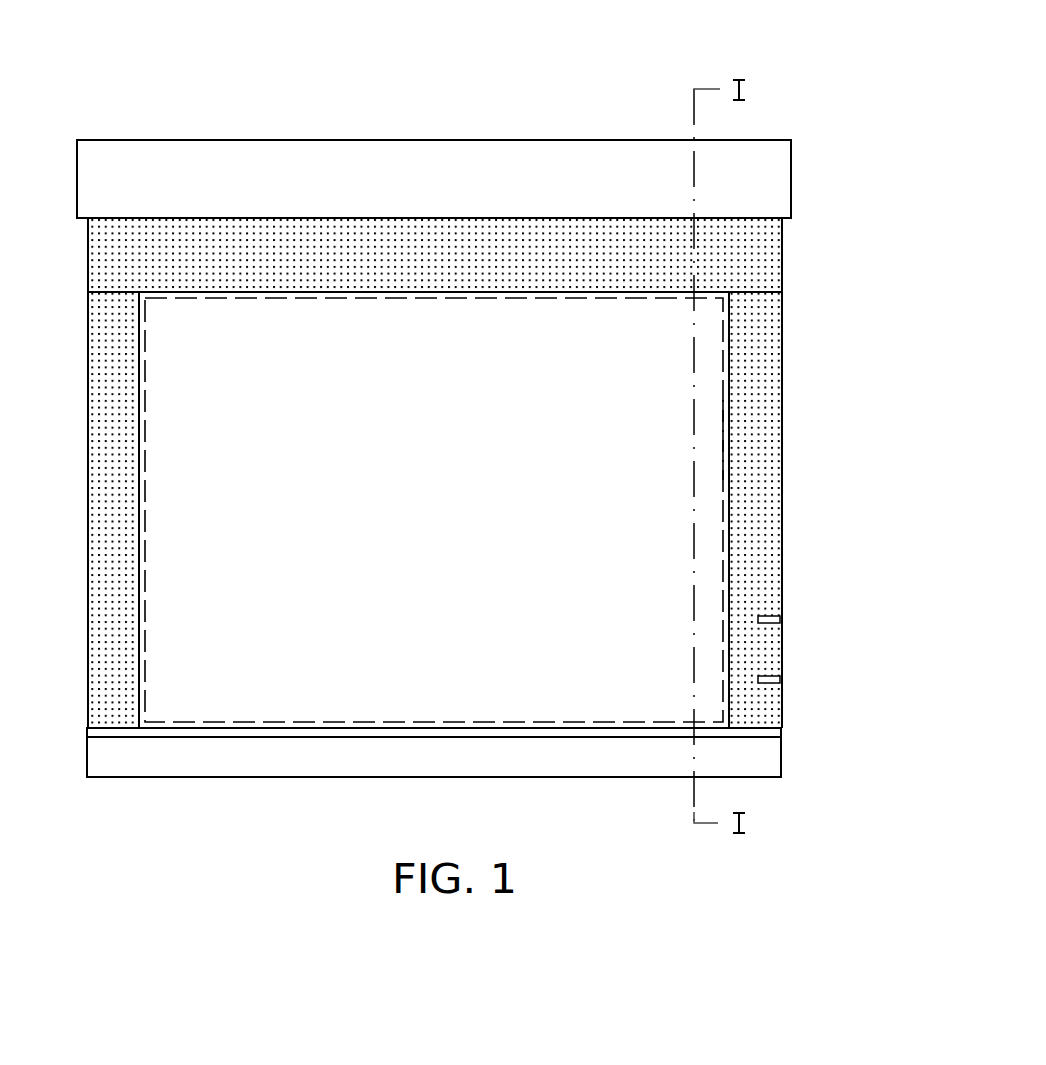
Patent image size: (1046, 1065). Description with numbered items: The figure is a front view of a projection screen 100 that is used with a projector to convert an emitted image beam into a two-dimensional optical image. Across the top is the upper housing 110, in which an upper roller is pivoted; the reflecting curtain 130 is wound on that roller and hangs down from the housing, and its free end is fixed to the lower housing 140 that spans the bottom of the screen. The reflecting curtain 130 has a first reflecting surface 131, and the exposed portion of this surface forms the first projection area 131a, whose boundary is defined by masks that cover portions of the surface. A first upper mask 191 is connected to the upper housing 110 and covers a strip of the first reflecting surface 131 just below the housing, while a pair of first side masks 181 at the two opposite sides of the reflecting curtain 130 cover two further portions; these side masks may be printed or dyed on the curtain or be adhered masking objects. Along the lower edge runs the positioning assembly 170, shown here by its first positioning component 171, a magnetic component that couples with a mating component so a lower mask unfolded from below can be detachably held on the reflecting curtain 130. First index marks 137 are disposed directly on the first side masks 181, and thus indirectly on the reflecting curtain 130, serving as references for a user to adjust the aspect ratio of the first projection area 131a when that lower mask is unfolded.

The projection screen 100 is at (792, 125).
The upper housing 110 is at (766, 179).
The reflecting curtain 130 is at (713, 346).
The first reflecting surface 131 is at (712, 415).
The first projection area 131a is at (726, 463).
The first index mark 137 is at (780, 618).
The lower housing 140 is at (763, 755).
The positioning assembly 170 is at (770, 732).
The first positioning component 171 is at (491, 719).
The first side masks 181 is at (758, 537).
The first upper mask 191 is at (764, 261).